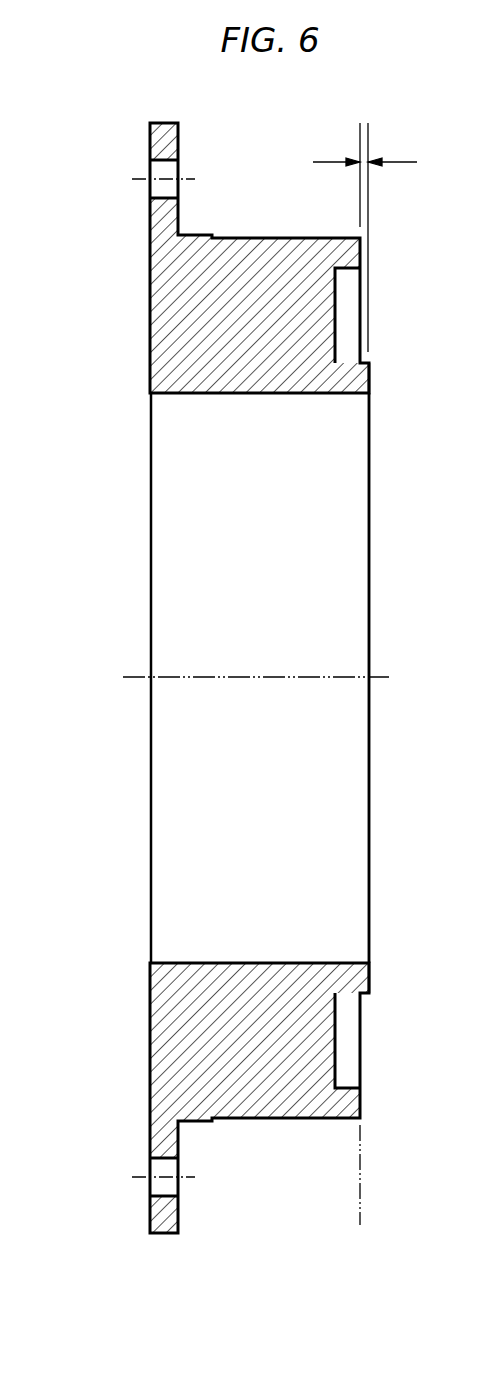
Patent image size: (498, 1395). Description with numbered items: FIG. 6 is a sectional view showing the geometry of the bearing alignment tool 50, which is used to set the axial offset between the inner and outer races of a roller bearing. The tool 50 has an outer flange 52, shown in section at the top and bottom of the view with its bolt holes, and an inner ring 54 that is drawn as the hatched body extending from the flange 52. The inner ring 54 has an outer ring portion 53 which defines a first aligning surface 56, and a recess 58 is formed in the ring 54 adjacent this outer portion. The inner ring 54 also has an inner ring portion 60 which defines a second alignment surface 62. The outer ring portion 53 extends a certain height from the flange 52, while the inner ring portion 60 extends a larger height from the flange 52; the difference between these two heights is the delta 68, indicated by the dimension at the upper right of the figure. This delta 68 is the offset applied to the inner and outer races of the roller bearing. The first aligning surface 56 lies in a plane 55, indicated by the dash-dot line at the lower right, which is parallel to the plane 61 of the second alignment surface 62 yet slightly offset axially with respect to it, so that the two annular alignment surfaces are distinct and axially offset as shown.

The bearing alignment tool 50 is at (122, 137).
The outer flange 52 is at (175, 141).
The outer ring portion 53 is at (274, 238).
The inner ring 54 is at (238, 325).
The plane 55 is at (360, 1168).
The first aligning surface 56 is at (362, 1103).
The recess 58 is at (335, 307).
The inner ring portion 60 is at (262, 393).
The plane 61 is at (369, 497).
The second alignment surface 62 is at (370, 982).
The delta 68 is at (398, 162).